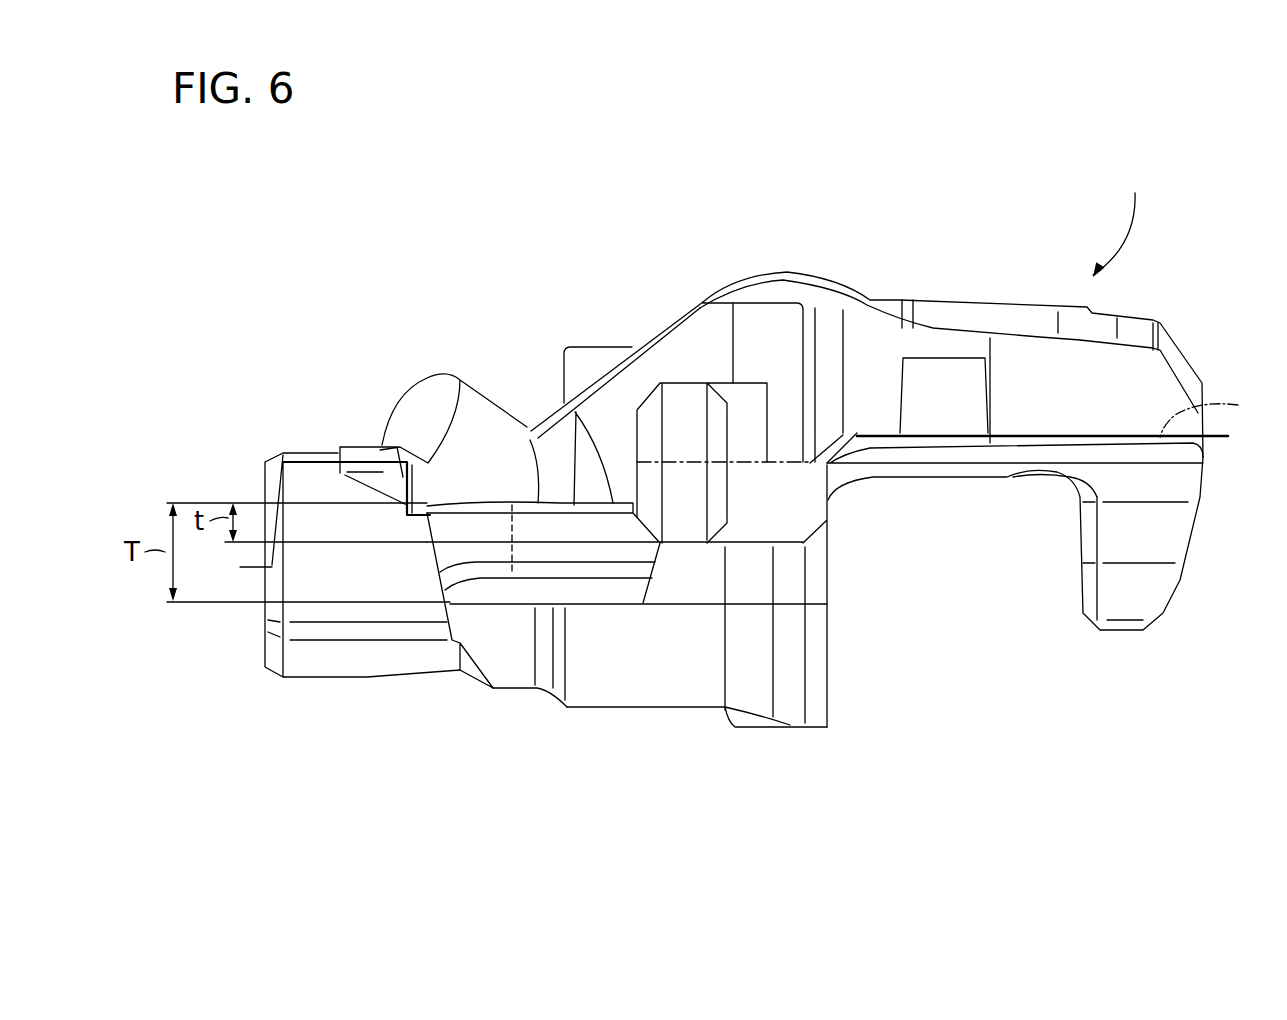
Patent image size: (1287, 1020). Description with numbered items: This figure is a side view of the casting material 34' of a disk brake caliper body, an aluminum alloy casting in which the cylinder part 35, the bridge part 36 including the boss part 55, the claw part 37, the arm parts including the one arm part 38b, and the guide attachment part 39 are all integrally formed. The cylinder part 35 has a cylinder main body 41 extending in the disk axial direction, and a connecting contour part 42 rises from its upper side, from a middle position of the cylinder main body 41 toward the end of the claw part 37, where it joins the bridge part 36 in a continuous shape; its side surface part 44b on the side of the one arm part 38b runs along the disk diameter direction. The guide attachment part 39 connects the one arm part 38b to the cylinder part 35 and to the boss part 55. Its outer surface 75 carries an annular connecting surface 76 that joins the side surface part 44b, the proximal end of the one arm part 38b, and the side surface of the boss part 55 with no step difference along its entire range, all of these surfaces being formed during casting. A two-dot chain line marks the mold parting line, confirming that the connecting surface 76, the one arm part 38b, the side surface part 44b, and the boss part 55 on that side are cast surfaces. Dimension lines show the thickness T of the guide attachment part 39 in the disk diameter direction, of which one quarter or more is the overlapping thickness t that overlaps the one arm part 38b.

The casting material 34' is at (1037, 445).
The cylinder part 35 is at (633, 688).
The bridge part 36 is at (937, 340).
The claw part 37 is at (1162, 535).
The one arm part 38b is at (680, 405).
The guide attachment part 39 is at (537, 560).
The cylinder main body 41 is at (373, 660).
The connecting contour part 42 is at (650, 367).
The side surface part 44b is at (622, 422).
The boss part 55 is at (423, 403).
The outer surface 75 is at (533, 437).
The connecting surface 76 is at (575, 412).